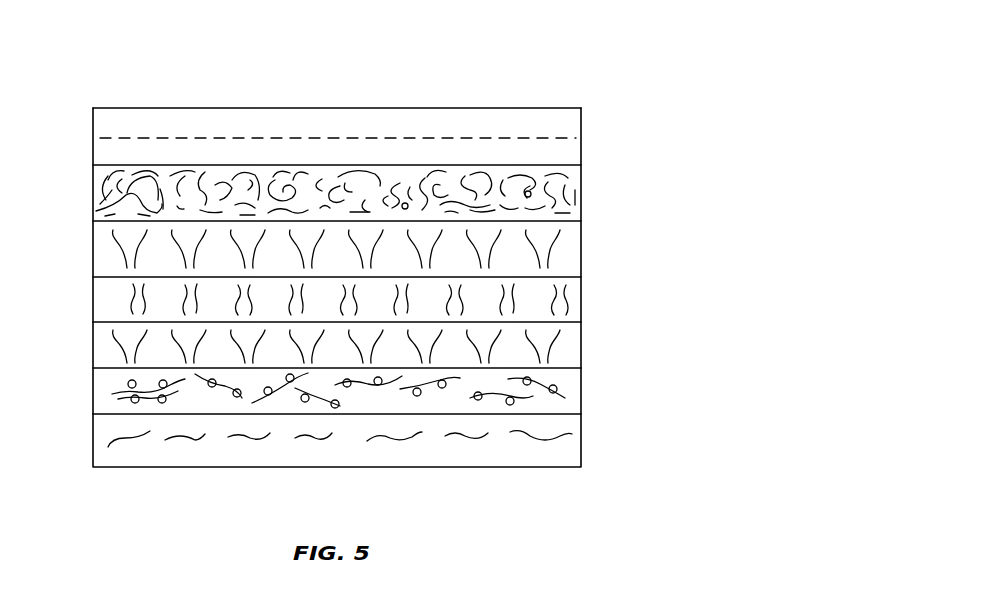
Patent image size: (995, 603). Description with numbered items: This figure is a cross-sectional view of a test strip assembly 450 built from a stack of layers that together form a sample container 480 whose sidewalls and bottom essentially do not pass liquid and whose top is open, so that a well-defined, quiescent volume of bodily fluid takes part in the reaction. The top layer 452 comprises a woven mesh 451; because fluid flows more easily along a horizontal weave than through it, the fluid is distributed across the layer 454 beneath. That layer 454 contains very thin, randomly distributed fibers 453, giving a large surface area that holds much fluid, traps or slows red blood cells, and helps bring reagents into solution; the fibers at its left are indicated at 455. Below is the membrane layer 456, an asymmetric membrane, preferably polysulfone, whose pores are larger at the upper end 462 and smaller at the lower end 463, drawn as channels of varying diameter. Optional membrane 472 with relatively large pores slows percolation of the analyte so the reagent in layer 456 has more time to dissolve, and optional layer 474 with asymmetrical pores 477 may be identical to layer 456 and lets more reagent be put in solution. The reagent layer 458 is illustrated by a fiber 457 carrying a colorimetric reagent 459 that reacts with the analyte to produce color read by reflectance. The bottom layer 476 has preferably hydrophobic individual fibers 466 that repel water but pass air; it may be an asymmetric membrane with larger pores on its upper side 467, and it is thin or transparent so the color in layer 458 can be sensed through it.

The test strip assembly 450 is at (617, 50).
The sample container 480 is at (343, 75).
The woven mesh 451 is at (193, 137).
The layer 452 is at (574, 123).
The fibers 453 is at (105, 213).
The layer 454 is at (575, 175).
The V-shaped fibers 455 is at (127, 244).
The layer 456 is at (573, 250).
The upper end 462 is at (580, 224).
The lower end 463 is at (560, 262).
The membrane 472 is at (573, 305).
The layer 474 is at (573, 345).
The layer 476 is at (125, 296).
The asymmetrical pores 477 is at (125, 338).
The fiber 457 is at (112, 395).
The reagent layer 458 is at (573, 395).
The reagent 459 is at (118, 400).
The upper side 467 is at (573, 423).
The fibers 466 is at (140, 438).